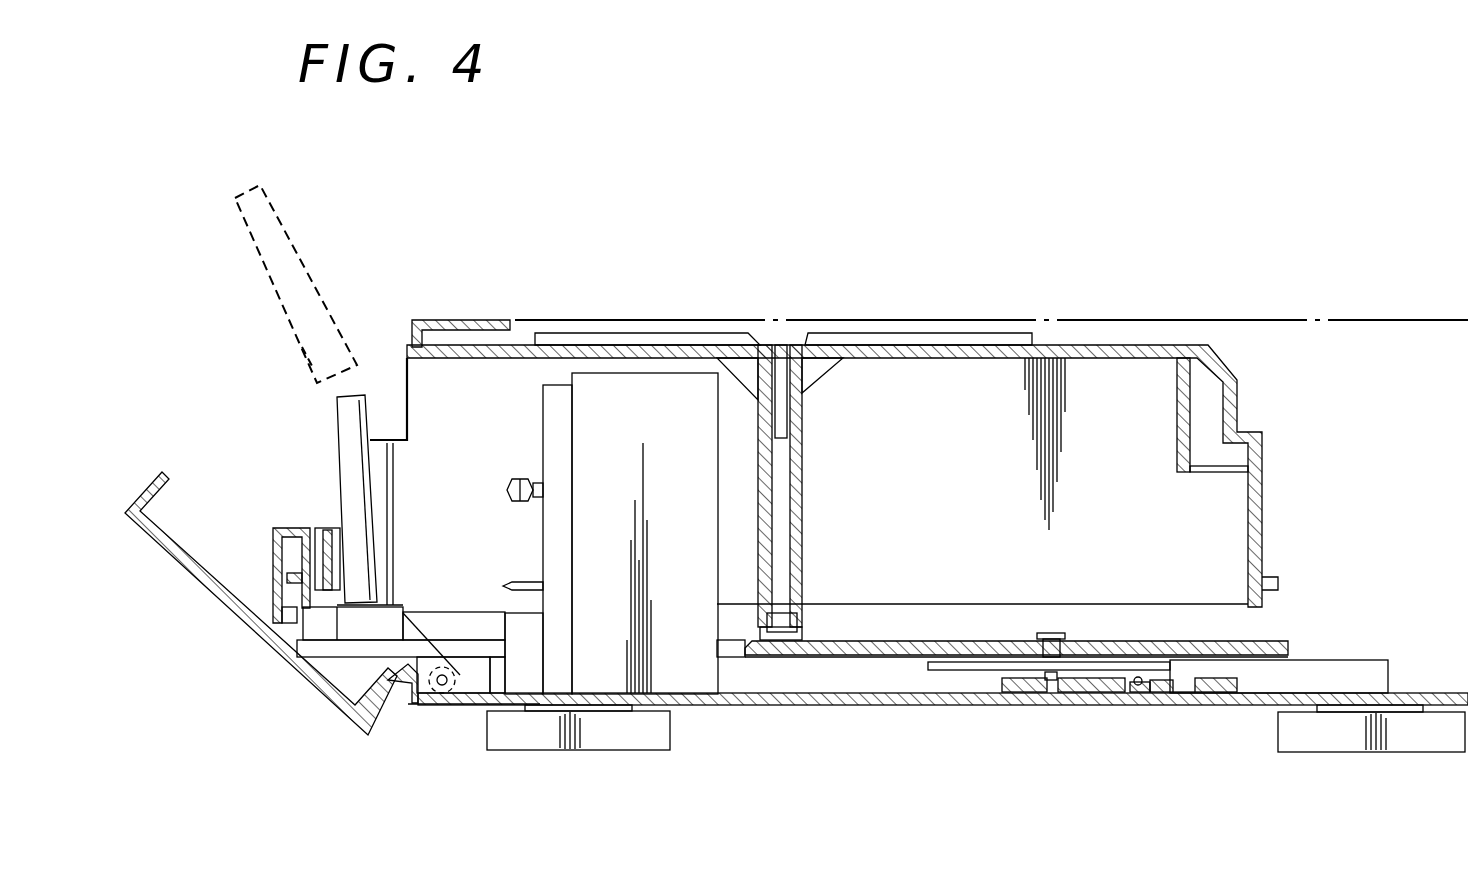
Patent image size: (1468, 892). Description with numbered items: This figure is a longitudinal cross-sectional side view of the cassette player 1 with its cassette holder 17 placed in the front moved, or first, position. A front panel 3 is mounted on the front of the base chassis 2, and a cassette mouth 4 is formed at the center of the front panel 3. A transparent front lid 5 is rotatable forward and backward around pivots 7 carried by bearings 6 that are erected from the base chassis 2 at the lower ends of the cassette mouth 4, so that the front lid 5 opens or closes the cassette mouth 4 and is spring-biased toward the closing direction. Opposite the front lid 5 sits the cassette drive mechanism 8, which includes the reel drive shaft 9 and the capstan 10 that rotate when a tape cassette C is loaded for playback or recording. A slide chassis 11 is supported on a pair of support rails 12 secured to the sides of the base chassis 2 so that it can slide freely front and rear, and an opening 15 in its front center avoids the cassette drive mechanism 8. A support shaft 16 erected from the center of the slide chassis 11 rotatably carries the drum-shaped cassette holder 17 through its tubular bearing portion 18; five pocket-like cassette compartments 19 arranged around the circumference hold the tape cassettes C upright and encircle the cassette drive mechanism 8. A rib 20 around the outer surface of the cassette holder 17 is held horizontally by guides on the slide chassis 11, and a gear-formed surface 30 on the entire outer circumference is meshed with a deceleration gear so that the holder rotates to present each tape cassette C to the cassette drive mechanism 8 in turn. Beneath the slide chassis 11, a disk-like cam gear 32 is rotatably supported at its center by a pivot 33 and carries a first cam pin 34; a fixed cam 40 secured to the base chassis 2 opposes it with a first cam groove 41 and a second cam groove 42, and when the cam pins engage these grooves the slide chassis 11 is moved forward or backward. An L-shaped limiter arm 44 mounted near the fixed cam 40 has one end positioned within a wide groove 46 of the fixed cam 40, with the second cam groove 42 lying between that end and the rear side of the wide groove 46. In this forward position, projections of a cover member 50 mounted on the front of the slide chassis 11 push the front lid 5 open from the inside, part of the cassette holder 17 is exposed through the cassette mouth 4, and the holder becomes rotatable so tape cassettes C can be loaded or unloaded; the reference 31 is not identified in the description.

The cassette player 1 is at (1238, 275).
The base chassis 2 is at (838, 706).
The front panel 3 is at (478, 320).
The cassette mouth 4 is at (407, 362).
The front lid 5 is at (185, 570).
The bearings 6 is at (428, 695).
The pivots 7 is at (450, 697).
The cassette drive mechanism 8 is at (645, 397).
The reel drive shaft 9 is at (520, 478).
The capstan 10 is at (512, 585).
The slide chassis 11 is at (910, 645).
The support rails 12 is at (1338, 675).
The opening 15 is at (745, 648).
The support shaft 16 is at (784, 492).
The cassette holder 17 is at (1090, 345).
The tubular bearing portion 18 is at (803, 430).
The cassette compartments 19 is at (340, 455).
The rib 20 is at (287, 577).
The gear-formed surface 30 is at (297, 600).
The contact gap 31 is at (1183, 679).
The cam gear 32 is at (960, 665).
The pivot 33 is at (1043, 655).
The first cam pin 34 is at (1030, 692).
The fixed cam 40 is at (1110, 677).
The first cam groove 41 is at (1065, 696).
The second cam groove 42 is at (1180, 700).
The limiter arm 44 is at (1157, 670).
The wide groove 46 is at (1130, 692).
The cover member 50 is at (277, 530).
The tape cassette C is at (363, 417).